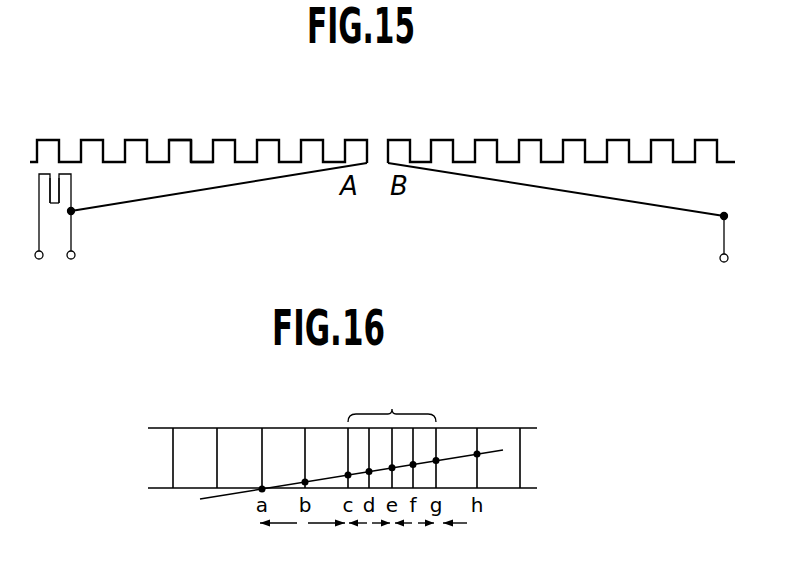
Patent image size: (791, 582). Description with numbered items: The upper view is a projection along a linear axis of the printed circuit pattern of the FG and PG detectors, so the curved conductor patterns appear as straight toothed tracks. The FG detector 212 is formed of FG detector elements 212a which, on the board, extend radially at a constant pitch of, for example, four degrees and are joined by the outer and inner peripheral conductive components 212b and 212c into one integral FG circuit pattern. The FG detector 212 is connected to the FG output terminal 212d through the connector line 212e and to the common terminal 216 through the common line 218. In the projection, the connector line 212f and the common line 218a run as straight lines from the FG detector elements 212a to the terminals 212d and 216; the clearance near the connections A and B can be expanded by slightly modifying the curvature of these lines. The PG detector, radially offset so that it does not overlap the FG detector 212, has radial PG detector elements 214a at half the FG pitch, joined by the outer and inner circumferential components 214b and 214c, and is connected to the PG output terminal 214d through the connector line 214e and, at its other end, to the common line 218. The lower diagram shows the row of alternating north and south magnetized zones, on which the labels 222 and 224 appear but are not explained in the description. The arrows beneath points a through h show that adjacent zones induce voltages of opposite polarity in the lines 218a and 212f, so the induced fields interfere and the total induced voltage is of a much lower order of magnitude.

In FIG. 15, the FG detector 212 is at (538, 132).
In FIG. 15, the FG detector elements 212a is at (195, 148).
In FIG. 15, the outer peripheral conductive component 212b is at (179, 140).
In FIG. 15, the inner peripheral conductive component 212c is at (203, 163).
In FIG. 15, the FG output terminal 212d is at (722, 263).
In FIG. 15, the connector line 212e is at (722, 235).
In FIG. 15, the connector line 212f is at (563, 191).
In FIG. 15, the PG detector elements 214a is at (52, 188).
In FIG. 15, the outer conductive circumferential component 214b is at (53, 203).
In FIG. 15, the inner conductive circumferential component 214c is at (63, 172).
In FIG. 15, the PG output terminal 214d is at (40, 260).
In FIG. 15, the connector line 214e is at (40, 237).
In FIG. 15, the common terminal 216 is at (75, 260).
In FIG. 15, the common line 218 is at (75, 240).
In FIG. 15, the common line 218a is at (252, 183).
In FIG. 16, the common line 218a is at (222, 500).
In FIG. 16, the magnet strip 222 is at (227, 437).
In FIG. 16, the fine-pitch magnet group 224 is at (392, 436).